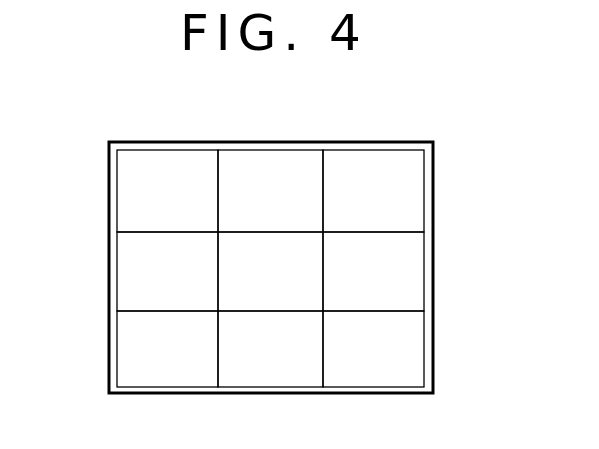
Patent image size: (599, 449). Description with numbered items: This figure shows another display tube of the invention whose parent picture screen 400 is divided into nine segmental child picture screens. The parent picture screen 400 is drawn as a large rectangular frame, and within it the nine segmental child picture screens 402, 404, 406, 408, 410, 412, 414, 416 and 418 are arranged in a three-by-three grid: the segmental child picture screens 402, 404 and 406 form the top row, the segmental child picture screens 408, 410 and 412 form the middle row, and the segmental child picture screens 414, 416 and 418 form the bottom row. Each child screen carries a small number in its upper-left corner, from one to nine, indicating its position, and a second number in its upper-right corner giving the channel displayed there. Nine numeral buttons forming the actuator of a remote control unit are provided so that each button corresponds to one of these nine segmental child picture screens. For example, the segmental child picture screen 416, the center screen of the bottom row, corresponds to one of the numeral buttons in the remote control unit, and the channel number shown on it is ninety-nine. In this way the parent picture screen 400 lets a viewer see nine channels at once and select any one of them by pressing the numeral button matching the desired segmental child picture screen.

The parent picture screen 400 is at (437, 257).
The segmental child picture screen 402 is at (167, 160).
The segmental child picture screen 404 is at (277, 160).
The segmental child picture screen 406 is at (377, 160).
The segmental child picture screen 408 is at (131, 278).
The segmental child picture screen 410 is at (265, 302).
The segmental child picture screen 412 is at (408, 283).
The segmental child picture screen 414 is at (131, 360).
The segmental child picture screen 416 is at (295, 370).
The segmental child picture screen 418 is at (408, 360).